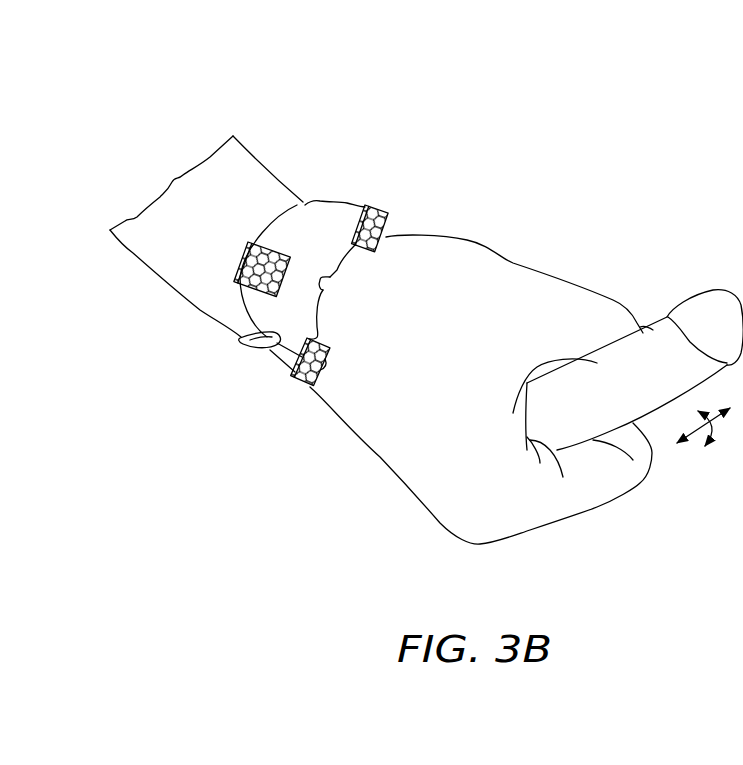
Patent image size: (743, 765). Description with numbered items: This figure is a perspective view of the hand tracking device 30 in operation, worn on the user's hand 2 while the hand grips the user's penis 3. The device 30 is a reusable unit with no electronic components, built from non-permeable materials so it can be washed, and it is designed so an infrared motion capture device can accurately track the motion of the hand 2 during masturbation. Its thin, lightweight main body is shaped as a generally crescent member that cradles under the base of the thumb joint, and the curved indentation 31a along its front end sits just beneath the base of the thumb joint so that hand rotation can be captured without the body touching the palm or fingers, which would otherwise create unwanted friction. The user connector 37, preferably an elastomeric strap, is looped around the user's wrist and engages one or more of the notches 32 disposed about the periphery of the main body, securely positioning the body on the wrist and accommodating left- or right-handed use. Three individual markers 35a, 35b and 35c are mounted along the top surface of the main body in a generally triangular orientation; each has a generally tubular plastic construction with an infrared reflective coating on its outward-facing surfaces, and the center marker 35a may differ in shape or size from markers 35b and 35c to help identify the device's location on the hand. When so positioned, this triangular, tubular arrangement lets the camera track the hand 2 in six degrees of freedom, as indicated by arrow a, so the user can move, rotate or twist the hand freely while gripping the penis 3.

The hand tracking device 30 is at (207, 116).
The hand 2 is at (479, 377).
The penis 3 is at (663, 340).
The arrow a is at (704, 427).
The indentation 31a is at (343, 263).
The notches 32 is at (330, 287).
The center marker 35a is at (257, 262).
The marker 35b is at (373, 217).
The marker 35c is at (307, 390).
The user connector 37 is at (243, 347).